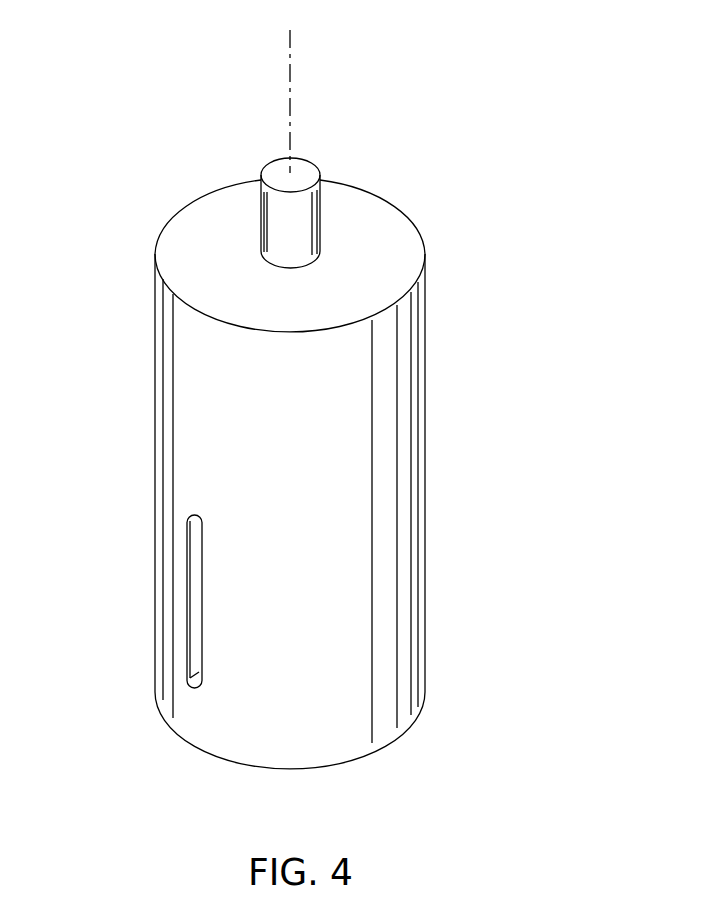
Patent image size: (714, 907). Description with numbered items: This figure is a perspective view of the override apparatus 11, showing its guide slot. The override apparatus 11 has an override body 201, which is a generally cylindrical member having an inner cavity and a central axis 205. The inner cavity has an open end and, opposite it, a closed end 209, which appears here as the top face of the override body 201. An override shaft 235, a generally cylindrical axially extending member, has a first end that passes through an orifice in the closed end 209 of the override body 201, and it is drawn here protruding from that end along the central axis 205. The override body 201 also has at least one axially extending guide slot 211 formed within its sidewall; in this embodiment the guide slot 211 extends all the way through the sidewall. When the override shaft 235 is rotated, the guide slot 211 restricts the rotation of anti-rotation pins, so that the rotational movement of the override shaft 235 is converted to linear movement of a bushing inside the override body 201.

The override apparatus 11 is at (136, 95).
The central axis 205 is at (291, 97).
The override body 201 is at (320, 473).
The closed end 209 is at (385, 237).
The override shaft 235 is at (261, 212).
The guide slot 211 is at (193, 589).